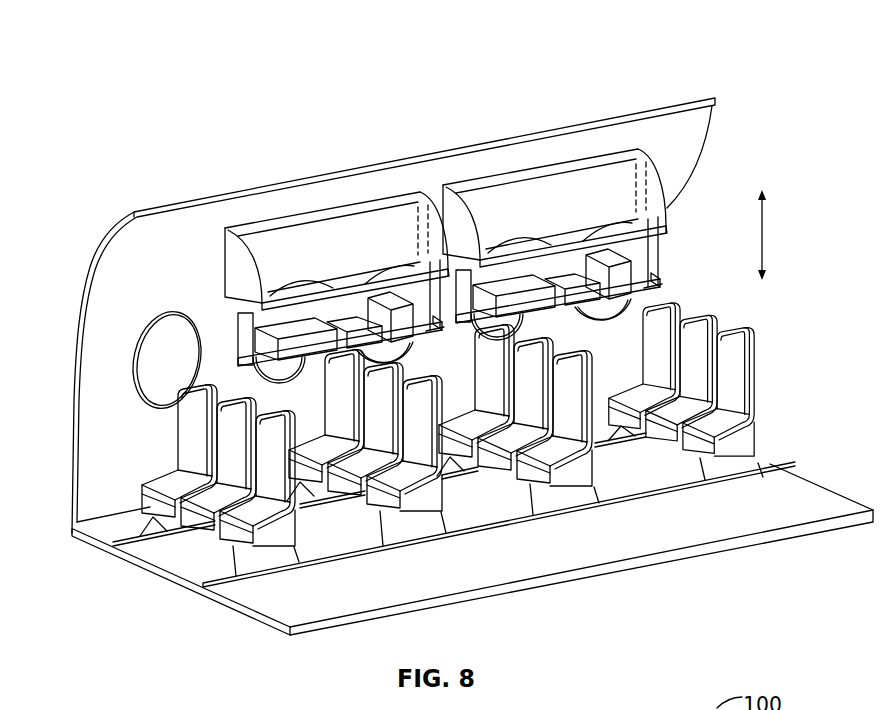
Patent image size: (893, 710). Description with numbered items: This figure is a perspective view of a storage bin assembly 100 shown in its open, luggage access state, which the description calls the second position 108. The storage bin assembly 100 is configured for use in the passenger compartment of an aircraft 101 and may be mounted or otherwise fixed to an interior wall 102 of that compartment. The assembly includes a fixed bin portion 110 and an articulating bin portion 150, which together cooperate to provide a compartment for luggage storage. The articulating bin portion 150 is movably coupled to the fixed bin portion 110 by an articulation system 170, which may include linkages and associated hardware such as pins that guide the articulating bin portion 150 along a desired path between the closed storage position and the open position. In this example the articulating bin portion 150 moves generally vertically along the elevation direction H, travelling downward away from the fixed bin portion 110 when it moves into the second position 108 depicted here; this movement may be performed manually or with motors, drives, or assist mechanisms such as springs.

The storage bin assembly 100 is at (507, 250).
The aircraft 101 is at (614, 74).
The interior wall 102 is at (672, 125).
The second position 108 is at (304, 668).
The fixed bin portion 110 is at (672, 208).
The articulating bin portion 150 is at (650, 288).
The articulation system 170 is at (655, 250).
The elevation direction H is at (764, 238).